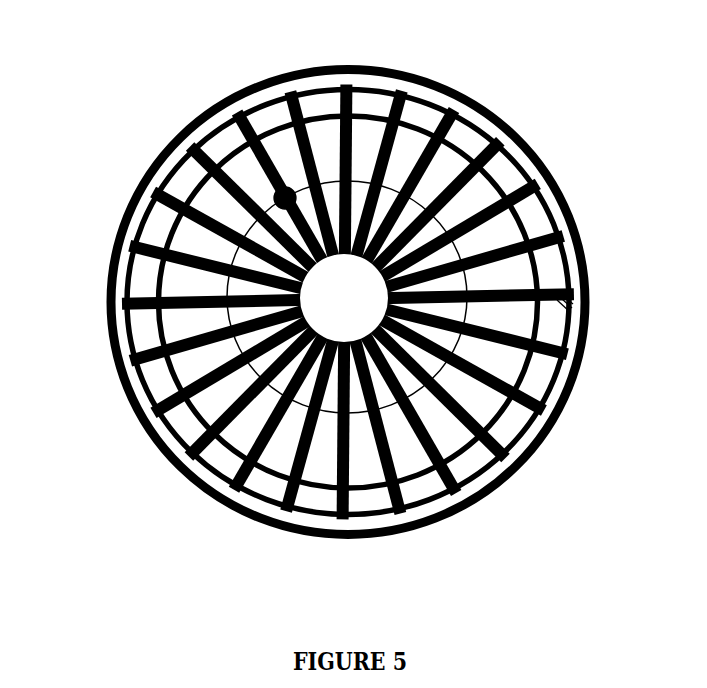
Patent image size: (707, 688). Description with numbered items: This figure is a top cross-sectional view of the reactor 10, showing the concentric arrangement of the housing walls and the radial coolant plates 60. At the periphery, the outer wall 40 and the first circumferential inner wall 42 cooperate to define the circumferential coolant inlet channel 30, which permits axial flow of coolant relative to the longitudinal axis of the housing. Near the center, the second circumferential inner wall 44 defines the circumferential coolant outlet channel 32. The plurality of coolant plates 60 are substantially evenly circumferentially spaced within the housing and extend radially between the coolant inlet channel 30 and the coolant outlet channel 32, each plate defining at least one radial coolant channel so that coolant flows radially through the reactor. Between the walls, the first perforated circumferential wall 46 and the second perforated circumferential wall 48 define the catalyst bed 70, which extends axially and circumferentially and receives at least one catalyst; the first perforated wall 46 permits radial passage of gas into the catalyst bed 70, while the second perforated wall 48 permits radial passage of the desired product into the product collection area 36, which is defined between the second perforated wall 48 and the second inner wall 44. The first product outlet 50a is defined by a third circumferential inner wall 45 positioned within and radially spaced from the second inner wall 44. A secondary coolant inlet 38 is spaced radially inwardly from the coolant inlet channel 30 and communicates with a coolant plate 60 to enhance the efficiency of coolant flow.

The reactor 10 is at (77, 49).
The coolant inlet channel 30 is at (560, 217).
The coolant outlet channel 32 is at (300, 392).
The product collection area 36 is at (326, 398).
The secondary coolant inlet 38 is at (276, 188).
The outer wall 40 is at (543, 155).
The first circumferential inner wall 42 is at (573, 273).
The second circumferential inner wall 44 is at (240, 250).
The third circumferential inner wall 45 is at (290, 320).
The first perforated circumferential wall 46 is at (250, 358).
The second perforated circumferential wall 48 is at (258, 233).
The first product outlet 50a is at (340, 297).
The coolant plate 60 is at (573, 300).
The catalyst bed 70 is at (445, 420).